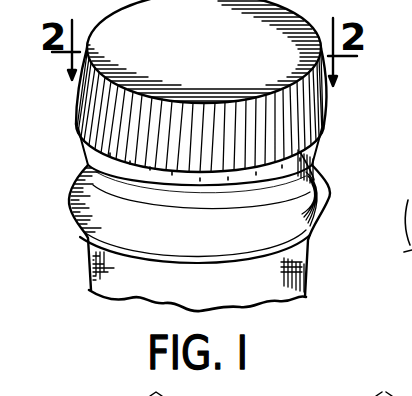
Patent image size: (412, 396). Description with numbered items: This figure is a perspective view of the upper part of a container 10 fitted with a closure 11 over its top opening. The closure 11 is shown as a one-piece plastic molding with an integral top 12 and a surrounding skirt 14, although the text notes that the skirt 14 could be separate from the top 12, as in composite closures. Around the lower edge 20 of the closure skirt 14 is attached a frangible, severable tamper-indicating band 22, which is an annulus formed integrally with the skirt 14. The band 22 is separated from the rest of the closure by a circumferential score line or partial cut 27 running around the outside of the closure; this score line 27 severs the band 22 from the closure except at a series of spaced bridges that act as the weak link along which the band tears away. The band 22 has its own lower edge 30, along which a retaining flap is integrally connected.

The container 10 is at (199, 256).
The closure 11 is at (238, 86).
The top 12 is at (204, 51).
The skirt 14 is at (330, 113).
The lower edge of closure skirt 20 is at (100, 148).
The tamper-indicating band 22 is at (400, 241).
The score line 27 is at (201, 206).
The lower edge of band 30 is at (228, 183).